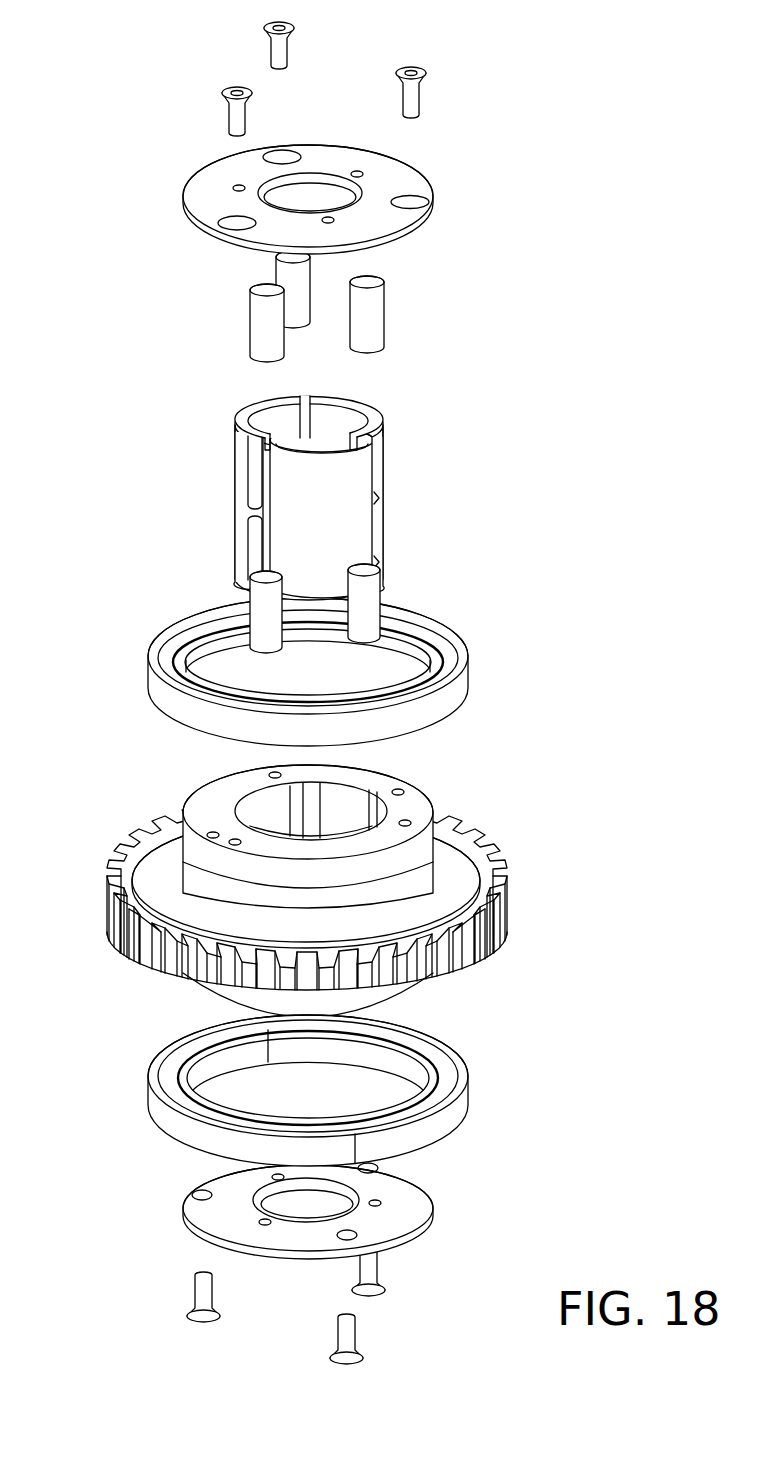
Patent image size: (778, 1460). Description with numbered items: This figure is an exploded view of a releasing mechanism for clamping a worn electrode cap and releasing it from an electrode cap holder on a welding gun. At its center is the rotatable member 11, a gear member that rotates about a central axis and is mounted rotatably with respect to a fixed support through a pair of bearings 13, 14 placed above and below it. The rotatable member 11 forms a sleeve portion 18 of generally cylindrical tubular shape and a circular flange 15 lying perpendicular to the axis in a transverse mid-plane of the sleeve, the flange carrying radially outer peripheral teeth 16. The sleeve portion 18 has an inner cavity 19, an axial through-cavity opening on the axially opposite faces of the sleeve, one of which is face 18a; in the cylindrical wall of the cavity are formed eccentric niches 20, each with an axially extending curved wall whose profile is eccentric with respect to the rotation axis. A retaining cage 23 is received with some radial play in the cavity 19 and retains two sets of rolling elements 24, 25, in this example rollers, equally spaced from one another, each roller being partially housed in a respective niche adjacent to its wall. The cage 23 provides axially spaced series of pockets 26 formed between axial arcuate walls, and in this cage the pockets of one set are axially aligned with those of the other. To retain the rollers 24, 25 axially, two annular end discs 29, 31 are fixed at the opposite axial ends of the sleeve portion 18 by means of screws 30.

The rotatable member 11 is at (309, 866).
The bearing 13 is at (446, 622).
The bearing 14 is at (467, 1060).
The circular flange 15 is at (500, 858).
The radially outer peripheral teeth 16 is at (500, 930).
The sleeve portion 18 is at (197, 778).
The axially opposite face 18a is at (365, 778).
The inner cavity 19 is at (270, 812).
The eccentric niches 20 is at (432, 825).
The retaining cage 23 is at (383, 457).
The rolling elements 24 is at (377, 317).
The rolling elements 25 is at (262, 627).
The pockets 26 is at (282, 418).
The annular end disc 29 is at (425, 1233).
The screws 30 is at (240, 113).
The annular end disc 31 is at (207, 182).